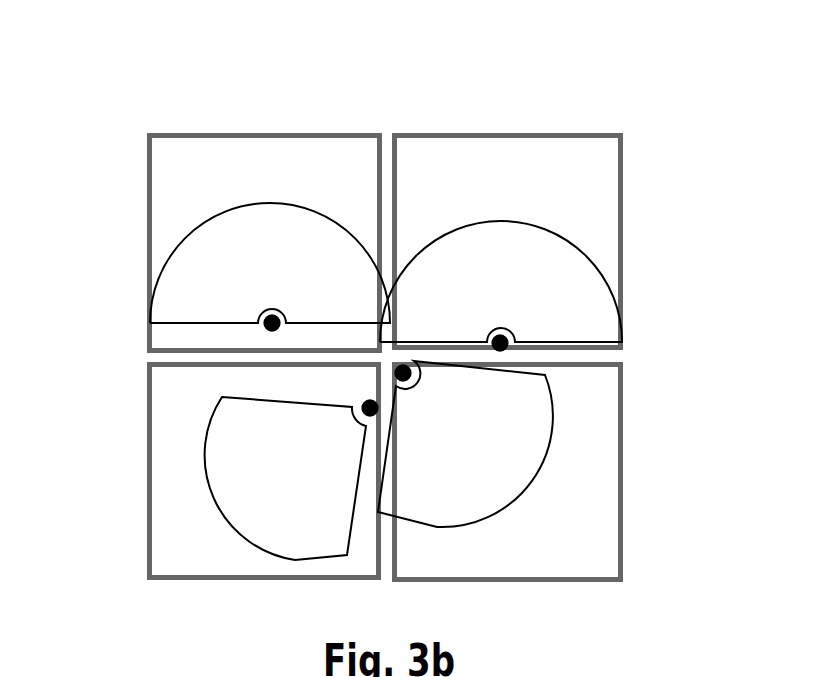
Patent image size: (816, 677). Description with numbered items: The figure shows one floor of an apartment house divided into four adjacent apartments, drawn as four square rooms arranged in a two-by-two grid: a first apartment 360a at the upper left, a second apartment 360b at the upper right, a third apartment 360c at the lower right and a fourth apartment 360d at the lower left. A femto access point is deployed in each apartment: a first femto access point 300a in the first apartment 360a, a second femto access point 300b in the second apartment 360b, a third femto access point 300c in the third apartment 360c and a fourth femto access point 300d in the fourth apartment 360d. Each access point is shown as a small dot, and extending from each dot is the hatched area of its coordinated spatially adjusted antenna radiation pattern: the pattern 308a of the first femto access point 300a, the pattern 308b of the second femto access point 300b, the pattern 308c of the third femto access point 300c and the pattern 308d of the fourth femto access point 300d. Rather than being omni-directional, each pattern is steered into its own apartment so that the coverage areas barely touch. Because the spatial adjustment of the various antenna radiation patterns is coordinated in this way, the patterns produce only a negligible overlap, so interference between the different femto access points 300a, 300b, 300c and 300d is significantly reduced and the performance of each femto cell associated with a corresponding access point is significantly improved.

The first apartment 360a is at (213, 135).
The second apartment 360b is at (560, 137).
The third apartment 360c is at (623, 535).
The fourth apartment 360d is at (147, 555).
The coordinated spatially adjusted antenna radiation pattern 308a is at (283, 200).
The coordinated spatially adjusted antenna radiation pattern 308b is at (533, 227).
The coordinated spatially adjusted antenna radiation pattern 308c is at (527, 492).
The coordinated spatially adjusted antenna radiation pattern 308d is at (245, 545).
The first femto access point 300a is at (262, 328).
The second femto access point 300b is at (510, 345).
The third femto access point 300c is at (398, 370).
The fourth femto access point 300d is at (367, 405).